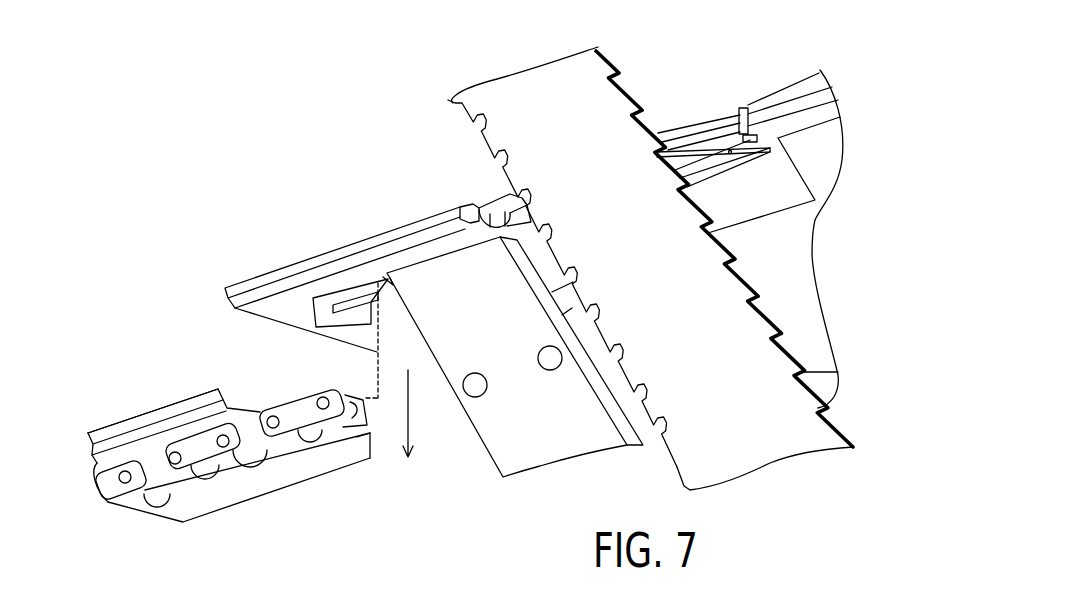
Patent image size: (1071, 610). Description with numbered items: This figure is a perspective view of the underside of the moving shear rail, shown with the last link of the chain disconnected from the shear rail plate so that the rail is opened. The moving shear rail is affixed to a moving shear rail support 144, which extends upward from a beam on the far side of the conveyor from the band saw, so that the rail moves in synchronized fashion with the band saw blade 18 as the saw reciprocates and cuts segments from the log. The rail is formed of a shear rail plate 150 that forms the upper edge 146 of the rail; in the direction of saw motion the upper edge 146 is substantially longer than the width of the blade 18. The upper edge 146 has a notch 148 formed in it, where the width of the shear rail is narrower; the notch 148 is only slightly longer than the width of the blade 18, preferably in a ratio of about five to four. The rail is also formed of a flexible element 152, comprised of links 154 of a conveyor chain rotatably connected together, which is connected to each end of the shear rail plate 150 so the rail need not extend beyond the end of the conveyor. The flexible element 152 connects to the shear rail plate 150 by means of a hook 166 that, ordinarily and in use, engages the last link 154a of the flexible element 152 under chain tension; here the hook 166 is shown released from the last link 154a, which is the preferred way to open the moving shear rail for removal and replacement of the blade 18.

The band saw blade 18 is at (620, 109).
The moving shear rail support 144 is at (503, 443).
The upper edge 146 is at (289, 268).
The notch 148 is at (470, 207).
The shear rail plate 150 is at (377, 248).
The flexible element 152 is at (131, 409).
The links 154 is at (163, 422).
The last link 154a is at (298, 418).
The hook 166 is at (320, 318).